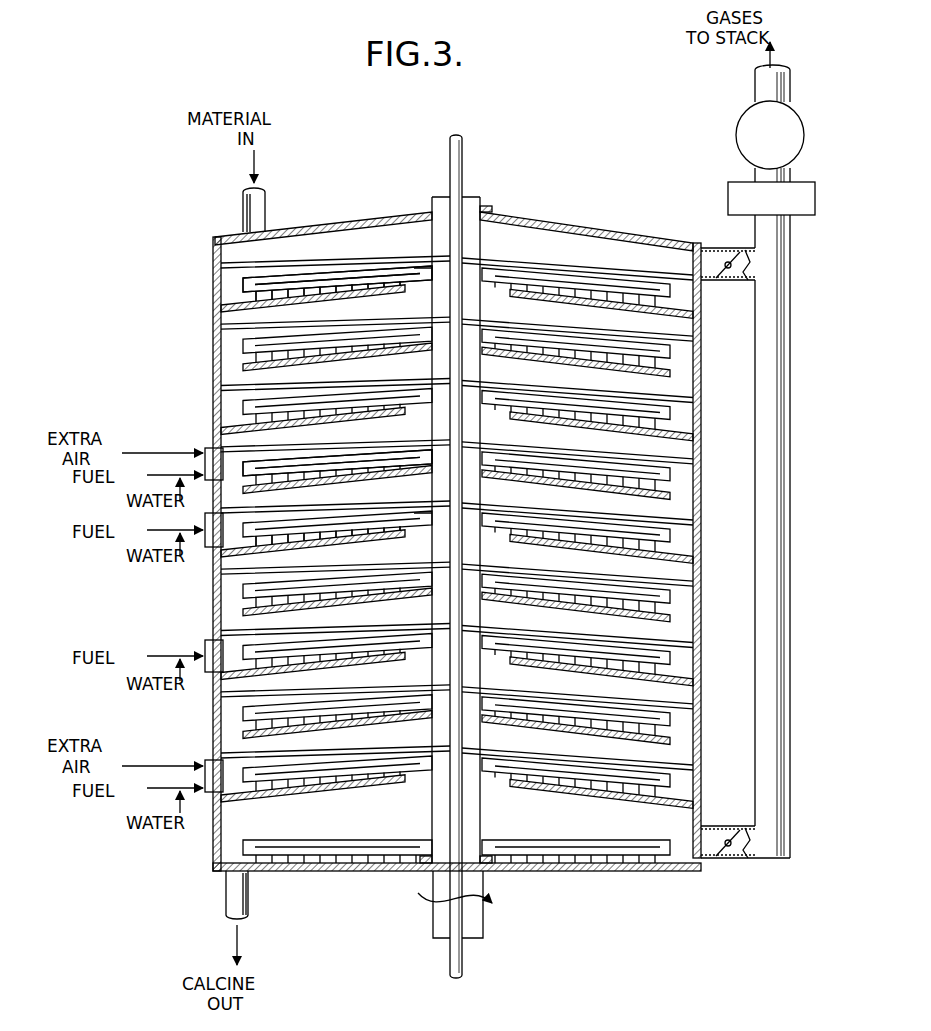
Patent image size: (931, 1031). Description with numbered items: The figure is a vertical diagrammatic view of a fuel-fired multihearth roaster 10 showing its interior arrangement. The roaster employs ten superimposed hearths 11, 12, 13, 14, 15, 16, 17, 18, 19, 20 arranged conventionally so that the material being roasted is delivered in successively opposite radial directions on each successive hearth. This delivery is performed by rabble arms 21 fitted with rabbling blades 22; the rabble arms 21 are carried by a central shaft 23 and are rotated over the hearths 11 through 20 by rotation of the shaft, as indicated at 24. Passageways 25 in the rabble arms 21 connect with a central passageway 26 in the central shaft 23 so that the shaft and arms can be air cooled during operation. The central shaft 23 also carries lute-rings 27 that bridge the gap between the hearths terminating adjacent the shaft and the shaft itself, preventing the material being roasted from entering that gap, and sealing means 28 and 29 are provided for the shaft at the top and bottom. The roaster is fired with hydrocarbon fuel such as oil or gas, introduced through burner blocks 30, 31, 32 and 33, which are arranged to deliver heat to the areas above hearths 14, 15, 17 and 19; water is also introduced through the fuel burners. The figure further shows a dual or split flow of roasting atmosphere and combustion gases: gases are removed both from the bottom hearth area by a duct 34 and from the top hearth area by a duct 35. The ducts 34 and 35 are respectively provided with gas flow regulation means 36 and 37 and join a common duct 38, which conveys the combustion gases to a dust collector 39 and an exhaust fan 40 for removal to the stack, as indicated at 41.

The multihearth roaster 10 is at (398, 217).
The hearth 11 is at (243, 309).
The hearth 12 is at (260, 369).
The hearth 13 is at (258, 432).
The hearth 14 is at (256, 492).
The hearth 15 is at (252, 554).
The hearth 16 is at (256, 615).
The hearth 17 is at (254, 677).
The hearth 18 is at (256, 738).
The hearth 19 is at (255, 800).
The hearth 20 is at (262, 871).
The rabble arm 21 is at (221, 292).
The rabbling blade 22 is at (318, 300).
The central shaft 23 is at (442, 200).
The rotation of central shaft 24 is at (424, 893).
The passageway 25 is at (265, 290).
The central passageway 26 is at (462, 162).
The lute-ring 27 is at (430, 340).
The sealing means 28 is at (484, 207).
The sealing means 29 is at (418, 862).
The burner block 30 is at (208, 450).
The burner block 31 is at (207, 522).
The burner block 32 is at (207, 652).
The burner block 33 is at (207, 766).
The duct 34 is at (703, 860).
The duct 35 is at (703, 248).
The gas flow regulation means 36 is at (745, 843).
The gas flow regulation means 37 is at (728, 258).
The duct 38 is at (790, 488).
The dust collector 39 is at (745, 200).
The exhaust fan 40 is at (758, 132).
The gas removal 41 is at (758, 70).